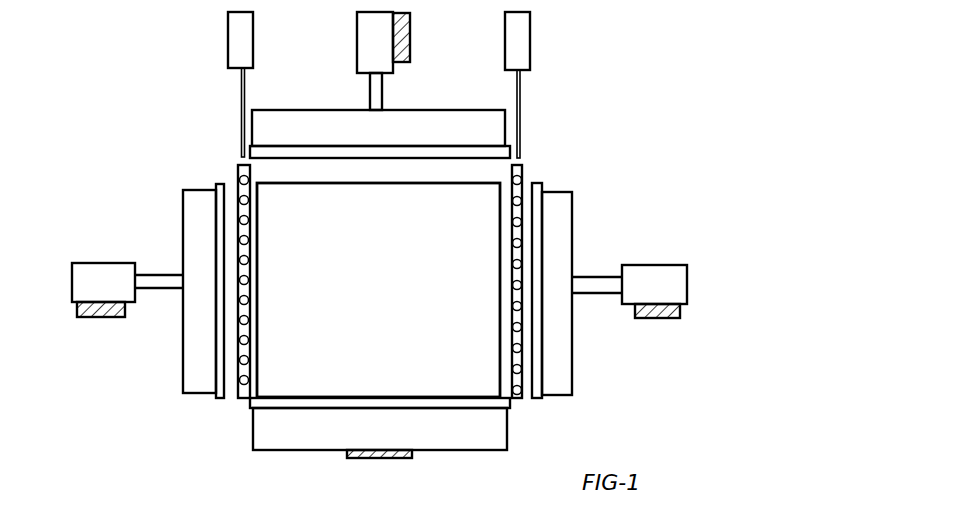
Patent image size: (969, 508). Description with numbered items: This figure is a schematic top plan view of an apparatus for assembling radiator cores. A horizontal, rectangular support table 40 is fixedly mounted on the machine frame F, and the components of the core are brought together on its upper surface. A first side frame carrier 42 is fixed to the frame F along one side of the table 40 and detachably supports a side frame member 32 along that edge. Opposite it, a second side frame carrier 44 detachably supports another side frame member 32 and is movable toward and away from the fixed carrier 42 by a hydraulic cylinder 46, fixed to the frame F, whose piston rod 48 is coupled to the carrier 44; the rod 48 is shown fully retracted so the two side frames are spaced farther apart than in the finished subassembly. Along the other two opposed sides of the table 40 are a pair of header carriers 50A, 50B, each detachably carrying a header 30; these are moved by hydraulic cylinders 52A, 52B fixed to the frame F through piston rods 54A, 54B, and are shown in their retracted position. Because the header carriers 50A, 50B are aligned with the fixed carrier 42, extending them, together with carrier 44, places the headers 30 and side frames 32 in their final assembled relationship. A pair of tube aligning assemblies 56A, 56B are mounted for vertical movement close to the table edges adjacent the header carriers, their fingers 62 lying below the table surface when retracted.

The header 30 is at (212, 385).
The side frame member 32 is at (430, 121).
The support table 40 is at (403, 298).
The first side frame carrier 42 is at (301, 438).
The second side frame carrier 44 is at (462, 80).
The hydraulic cylinder 46 is at (357, 40).
The piston rod 48 is at (370, 90).
The header carrier 50A is at (192, 208).
The header carrier 50B is at (553, 193).
The hydraulic cylinder 52A is at (80, 275).
The hydraulic cylinder 52B is at (722, 258).
The piston rod 54A is at (150, 277).
The piston rod 54B is at (596, 282).
The tube aligning assembly 56A is at (234, 142).
The tube aligning assembly 56B is at (525, 163).
The fingers 62 is at (249, 221).
The machine frame F is at (410, 41).